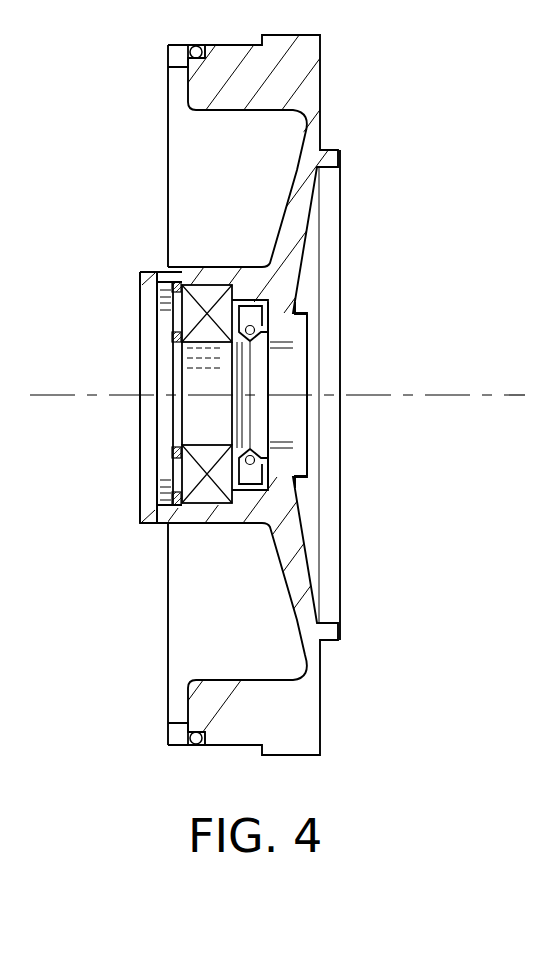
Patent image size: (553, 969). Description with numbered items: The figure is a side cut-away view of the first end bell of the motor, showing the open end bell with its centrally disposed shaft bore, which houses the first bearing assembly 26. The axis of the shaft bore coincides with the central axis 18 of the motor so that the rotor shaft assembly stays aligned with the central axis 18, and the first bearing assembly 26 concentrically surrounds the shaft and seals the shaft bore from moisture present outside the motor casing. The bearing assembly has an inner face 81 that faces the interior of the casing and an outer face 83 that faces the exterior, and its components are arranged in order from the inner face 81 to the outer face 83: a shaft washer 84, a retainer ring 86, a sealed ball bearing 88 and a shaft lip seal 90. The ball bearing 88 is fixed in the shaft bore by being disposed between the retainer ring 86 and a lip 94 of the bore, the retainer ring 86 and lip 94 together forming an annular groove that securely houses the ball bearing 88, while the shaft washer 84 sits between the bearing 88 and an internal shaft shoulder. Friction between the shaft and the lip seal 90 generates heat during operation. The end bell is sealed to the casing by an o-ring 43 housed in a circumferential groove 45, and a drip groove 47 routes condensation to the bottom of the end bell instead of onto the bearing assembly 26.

The central axis 18 is at (477, 393).
The first bearing assembly 26 is at (146, 276).
The o-ring 43 is at (195, 746).
The circumferential groove 45 is at (187, 722).
The drip groove 47 is at (167, 527).
The inner face 81 is at (298, 380).
The outer face 83 is at (311, 433).
The shaft washer 84 is at (173, 450).
The retainer ring 86 is at (171, 498).
The sealed ball bearing 88 is at (194, 308).
The shaft lip seal 90 is at (270, 343).
The lip 94 is at (232, 498).